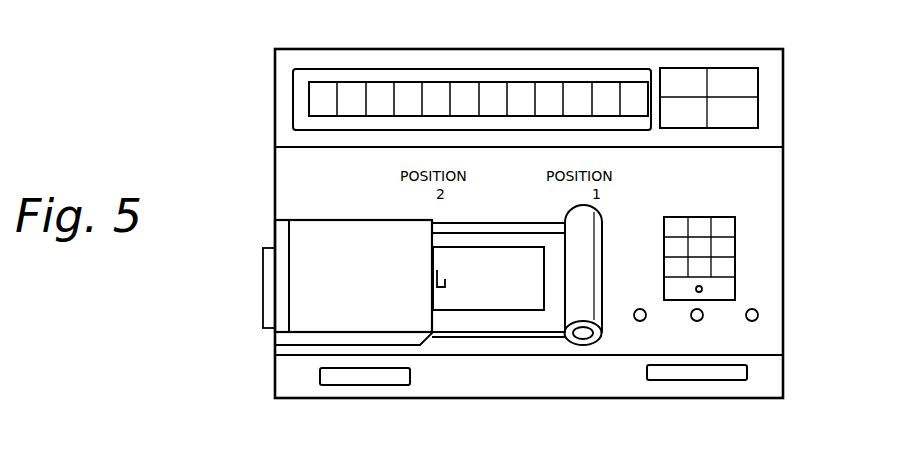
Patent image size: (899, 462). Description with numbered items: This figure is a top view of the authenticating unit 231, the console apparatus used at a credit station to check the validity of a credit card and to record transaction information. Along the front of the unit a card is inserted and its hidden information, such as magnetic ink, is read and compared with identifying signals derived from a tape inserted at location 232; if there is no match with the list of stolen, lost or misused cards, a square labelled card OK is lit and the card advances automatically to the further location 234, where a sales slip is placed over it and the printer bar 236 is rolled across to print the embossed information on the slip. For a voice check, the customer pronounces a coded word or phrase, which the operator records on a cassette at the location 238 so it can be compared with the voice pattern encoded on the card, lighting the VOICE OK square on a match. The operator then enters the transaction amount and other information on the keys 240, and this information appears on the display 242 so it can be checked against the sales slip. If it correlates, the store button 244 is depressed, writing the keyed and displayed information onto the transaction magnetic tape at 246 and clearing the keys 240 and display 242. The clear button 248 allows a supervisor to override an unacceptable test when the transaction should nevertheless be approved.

The authenticating unit 231 is at (266, 162).
The display 242 is at (542, 77).
The tape insertion location 232 is at (305, 312).
The further location 234 is at (473, 258).
The printer bar 236 is at (603, 213).
The keys 240 is at (735, 246).
The clear button 248 is at (758, 313).
The store button 244 is at (690, 323).
The cassette location 238 is at (345, 378).
The third transaction magnetic tape 246 is at (733, 372).